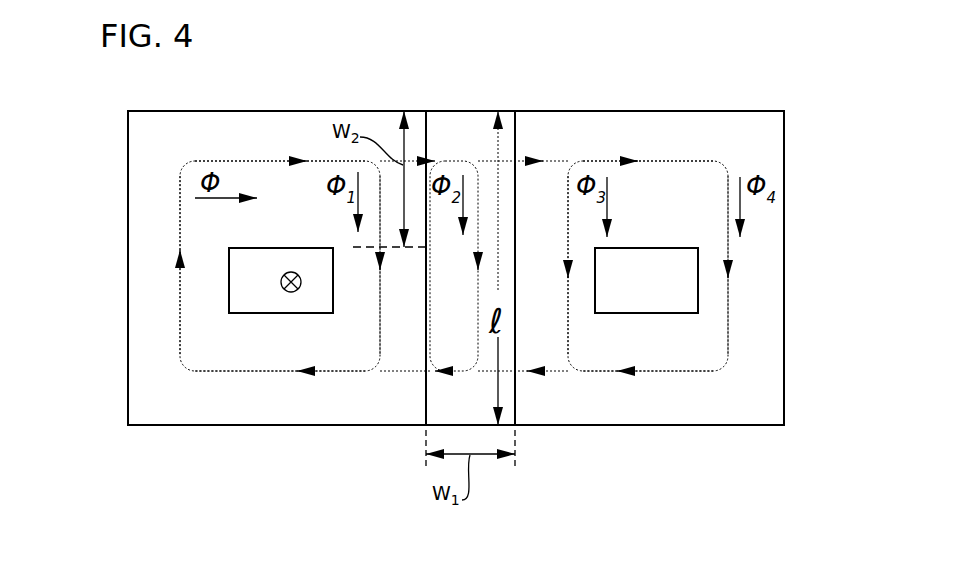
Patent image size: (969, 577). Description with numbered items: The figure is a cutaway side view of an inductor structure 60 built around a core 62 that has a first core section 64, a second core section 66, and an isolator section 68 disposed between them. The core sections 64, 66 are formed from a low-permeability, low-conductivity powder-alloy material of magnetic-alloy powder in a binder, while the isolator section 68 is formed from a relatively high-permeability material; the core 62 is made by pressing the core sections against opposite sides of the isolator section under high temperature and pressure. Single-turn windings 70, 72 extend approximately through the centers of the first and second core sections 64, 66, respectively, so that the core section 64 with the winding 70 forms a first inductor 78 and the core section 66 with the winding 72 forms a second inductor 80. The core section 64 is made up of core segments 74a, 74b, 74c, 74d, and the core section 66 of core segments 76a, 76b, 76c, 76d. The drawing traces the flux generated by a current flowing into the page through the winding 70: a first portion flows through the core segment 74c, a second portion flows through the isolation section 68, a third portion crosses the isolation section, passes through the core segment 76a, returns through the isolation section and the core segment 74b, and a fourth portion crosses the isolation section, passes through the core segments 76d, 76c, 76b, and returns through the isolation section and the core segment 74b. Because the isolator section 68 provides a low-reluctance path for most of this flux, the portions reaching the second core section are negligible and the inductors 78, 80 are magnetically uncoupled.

The inductor structure 60 is at (568, 75).
The core 62 is at (128, 425).
The first core section 64 is at (283, 111).
The second core section 66 is at (684, 111).
The isolator section 68 is at (458, 111).
The single-turn winding 70 is at (265, 291).
The single-turn winding 72 is at (657, 293).
The core segment 74a is at (172, 239).
The core segment 74b is at (277, 404).
The core segment 74c is at (420, 307).
The core segment 74d is at (275, 145).
The core segment 76a is at (557, 261).
The core segment 76b is at (649, 404).
The core segment 76c is at (769, 309).
The core segment 76d is at (650, 146).
The first inductor 78 is at (128, 111).
The second inductor 80 is at (784, 111).